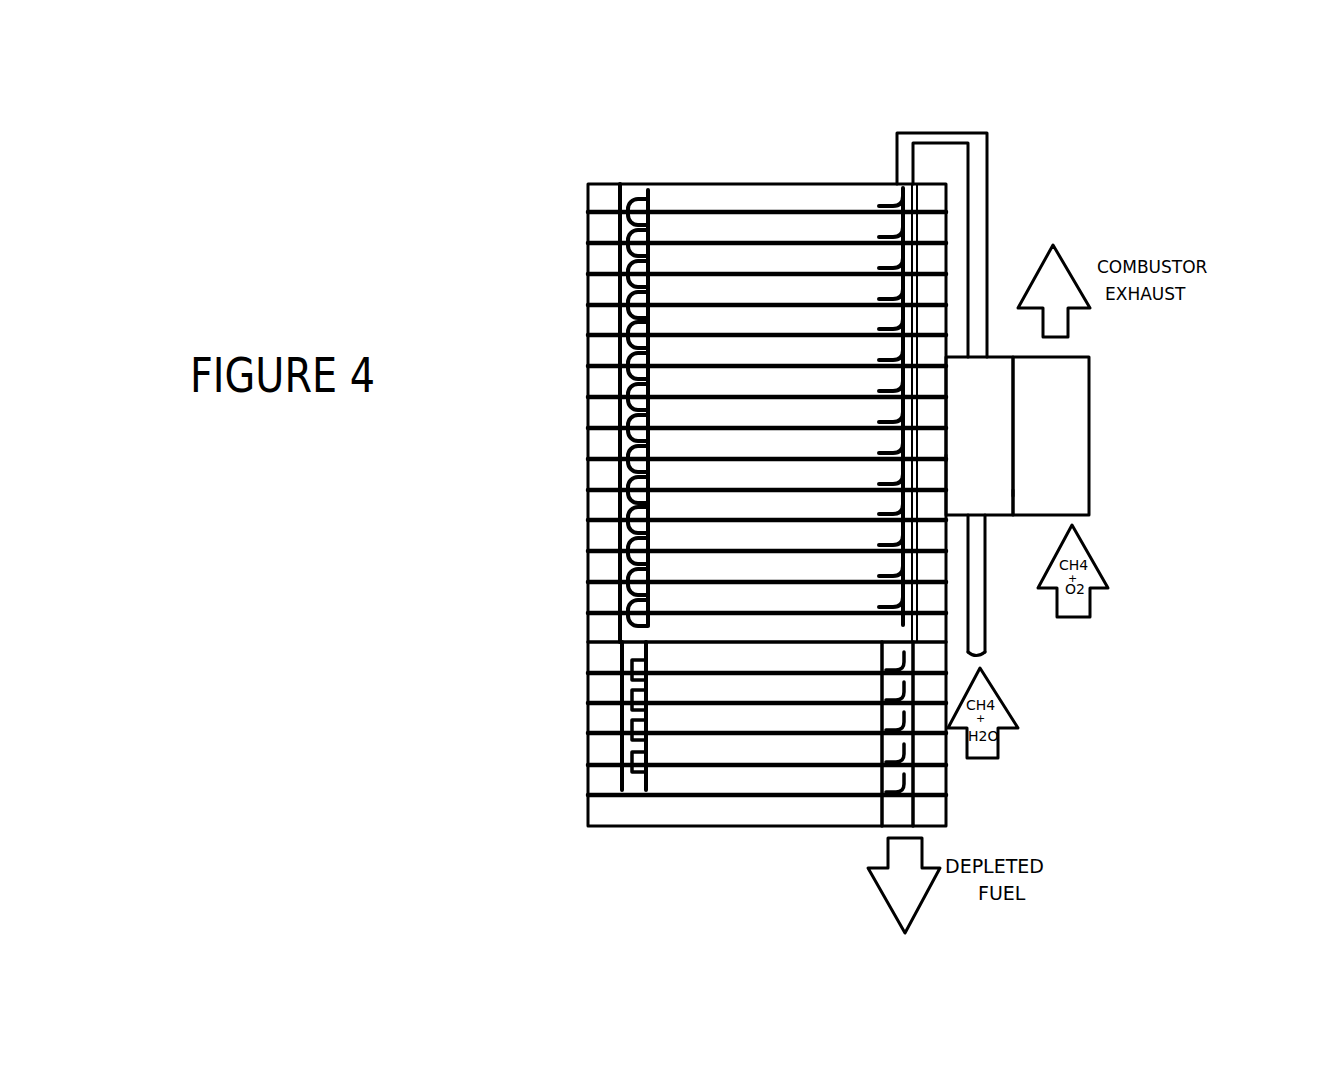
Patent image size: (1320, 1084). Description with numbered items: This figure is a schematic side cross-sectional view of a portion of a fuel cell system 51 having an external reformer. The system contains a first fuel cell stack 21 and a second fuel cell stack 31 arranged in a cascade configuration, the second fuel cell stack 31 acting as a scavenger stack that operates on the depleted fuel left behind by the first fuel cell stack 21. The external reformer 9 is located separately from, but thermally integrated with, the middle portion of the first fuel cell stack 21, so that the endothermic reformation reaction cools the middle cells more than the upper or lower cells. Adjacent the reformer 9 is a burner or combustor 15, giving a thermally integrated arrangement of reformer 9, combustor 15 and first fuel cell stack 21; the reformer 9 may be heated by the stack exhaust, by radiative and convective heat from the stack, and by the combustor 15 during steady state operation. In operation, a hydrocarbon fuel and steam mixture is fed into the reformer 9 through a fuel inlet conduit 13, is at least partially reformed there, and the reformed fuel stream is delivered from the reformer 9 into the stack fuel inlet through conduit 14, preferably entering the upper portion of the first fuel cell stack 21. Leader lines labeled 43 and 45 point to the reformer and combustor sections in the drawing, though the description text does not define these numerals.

The system 51 is at (777, 101).
The first fuel cell stack 21 is at (569, 185).
The second fuel cell stack 31 is at (568, 822).
The conduit 14 is at (942, 132).
The fuel inlet conduit 13 is at (987, 628).
The external reformer 9 is at (1002, 417).
The combustor 15 is at (1078, 447).
The reformer outlet 43 is at (947, 458).
The combustor inlet 45 is at (1015, 493).